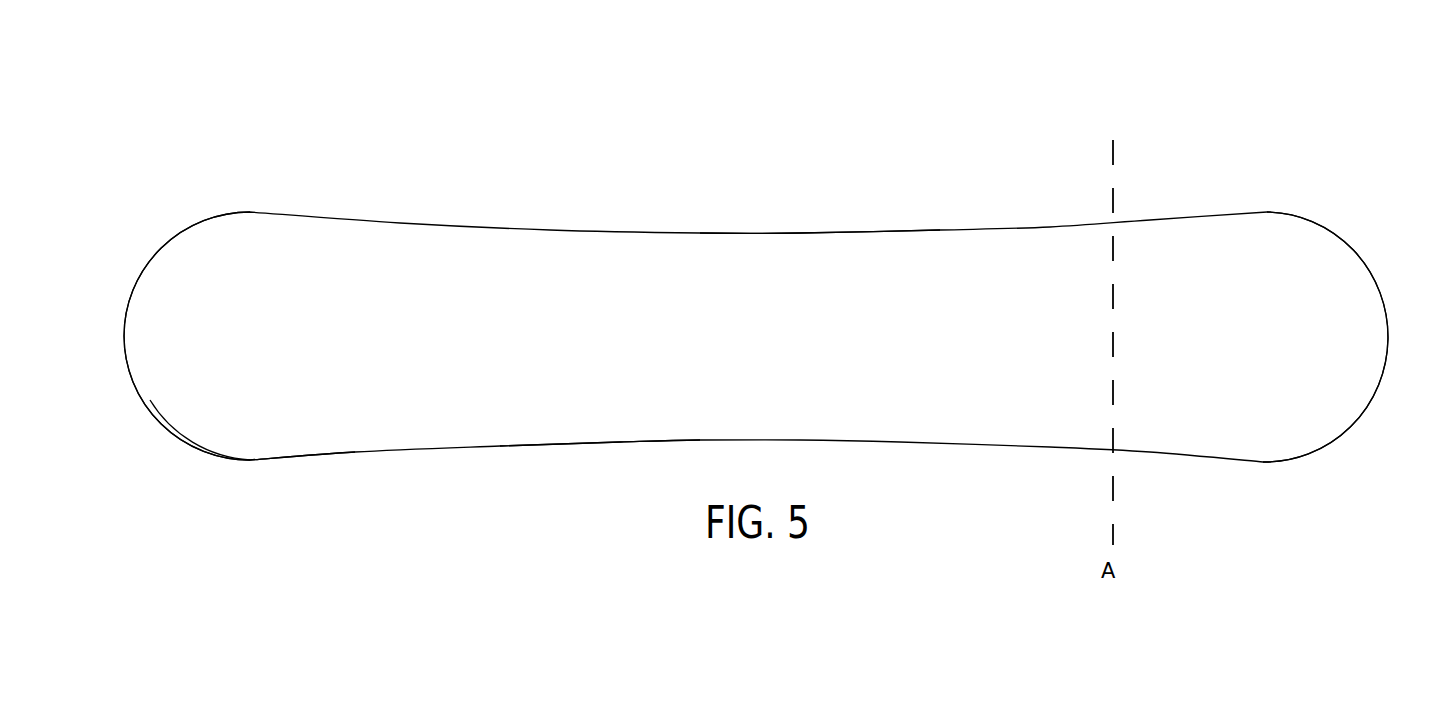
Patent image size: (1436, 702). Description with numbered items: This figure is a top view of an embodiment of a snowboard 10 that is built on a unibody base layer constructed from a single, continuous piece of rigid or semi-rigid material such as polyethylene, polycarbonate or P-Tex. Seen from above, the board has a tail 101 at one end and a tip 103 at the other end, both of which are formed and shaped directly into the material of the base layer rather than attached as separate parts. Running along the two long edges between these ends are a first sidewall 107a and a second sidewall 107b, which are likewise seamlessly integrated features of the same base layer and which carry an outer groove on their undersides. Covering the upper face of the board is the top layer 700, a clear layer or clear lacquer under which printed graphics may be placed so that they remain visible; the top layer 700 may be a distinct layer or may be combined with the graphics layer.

The snowboard 10 is at (1095, 97).
The tail 101 is at (124, 342).
The tip 103 is at (1388, 333).
The first sidewall 107a is at (622, 442).
The second sidewall 107b is at (830, 232).
The top layer 700 is at (399, 413).